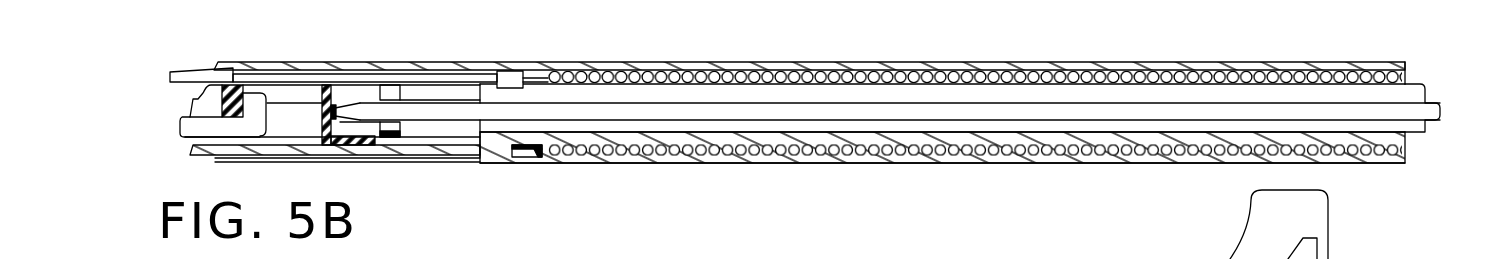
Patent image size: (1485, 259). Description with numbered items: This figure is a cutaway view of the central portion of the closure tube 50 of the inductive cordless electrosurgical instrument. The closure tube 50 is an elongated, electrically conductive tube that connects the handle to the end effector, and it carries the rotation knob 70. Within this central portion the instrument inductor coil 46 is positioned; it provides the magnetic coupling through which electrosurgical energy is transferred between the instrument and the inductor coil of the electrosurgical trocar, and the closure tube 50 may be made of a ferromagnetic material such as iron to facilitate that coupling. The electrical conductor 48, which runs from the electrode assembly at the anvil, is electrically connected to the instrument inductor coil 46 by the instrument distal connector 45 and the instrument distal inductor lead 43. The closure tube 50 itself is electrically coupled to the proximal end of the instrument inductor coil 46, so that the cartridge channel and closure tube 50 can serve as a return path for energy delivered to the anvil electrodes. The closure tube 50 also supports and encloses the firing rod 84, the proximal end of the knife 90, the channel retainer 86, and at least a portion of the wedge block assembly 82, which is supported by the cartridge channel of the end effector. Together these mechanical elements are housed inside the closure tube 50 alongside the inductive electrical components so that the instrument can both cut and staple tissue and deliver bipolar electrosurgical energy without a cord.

The instrument distal inductor lead 43 is at (534, 81).
The instrument distal connector 45 is at (518, 71).
The instrument inductor coil 46 is at (731, 78).
The electrical conductor 48 is at (346, 68).
The closure tube 50 is at (658, 65).
The rotation knob 70 is at (1307, 222).
The wedge block assembly 82 is at (231, 87).
The firing rod 84 is at (413, 113).
The channel retainer 86 is at (693, 137).
The knife 90 is at (232, 137).